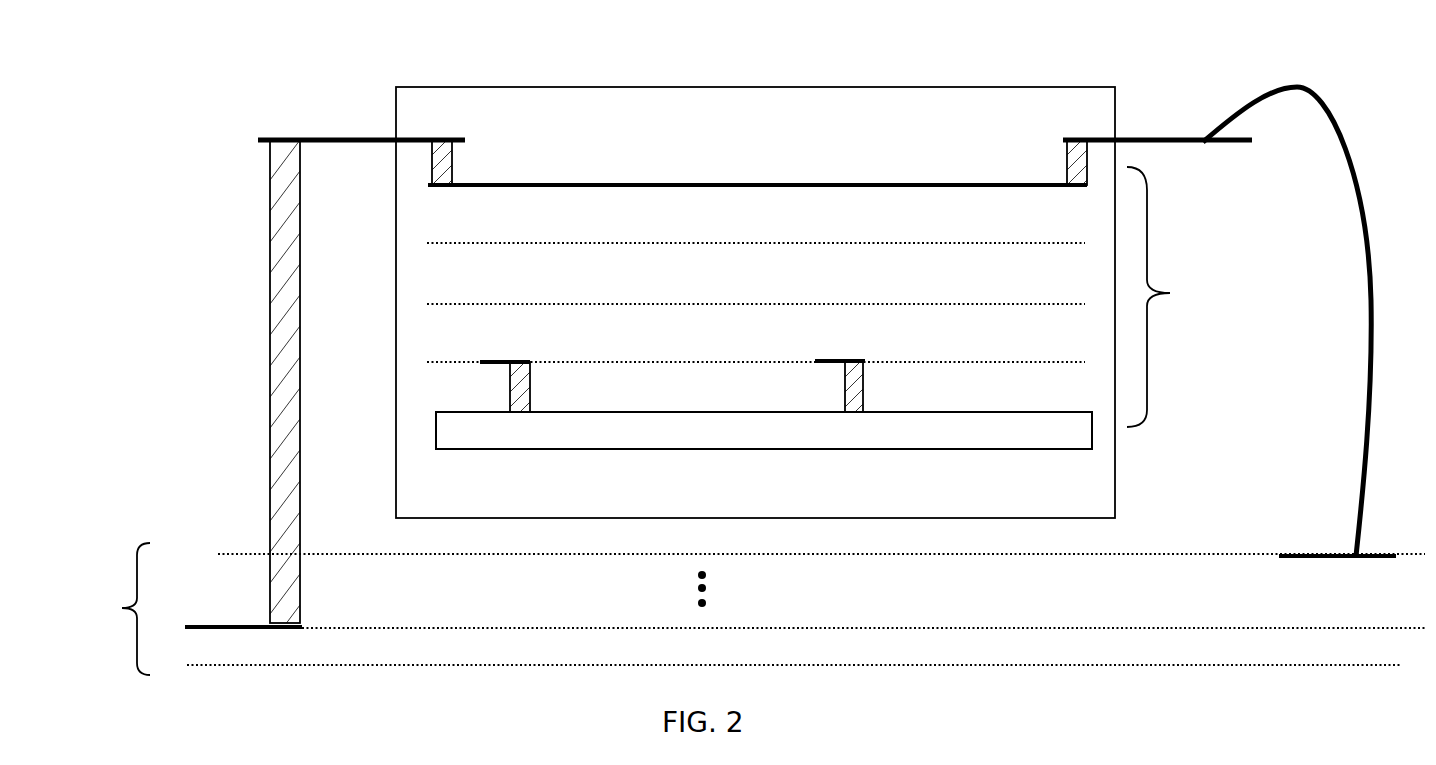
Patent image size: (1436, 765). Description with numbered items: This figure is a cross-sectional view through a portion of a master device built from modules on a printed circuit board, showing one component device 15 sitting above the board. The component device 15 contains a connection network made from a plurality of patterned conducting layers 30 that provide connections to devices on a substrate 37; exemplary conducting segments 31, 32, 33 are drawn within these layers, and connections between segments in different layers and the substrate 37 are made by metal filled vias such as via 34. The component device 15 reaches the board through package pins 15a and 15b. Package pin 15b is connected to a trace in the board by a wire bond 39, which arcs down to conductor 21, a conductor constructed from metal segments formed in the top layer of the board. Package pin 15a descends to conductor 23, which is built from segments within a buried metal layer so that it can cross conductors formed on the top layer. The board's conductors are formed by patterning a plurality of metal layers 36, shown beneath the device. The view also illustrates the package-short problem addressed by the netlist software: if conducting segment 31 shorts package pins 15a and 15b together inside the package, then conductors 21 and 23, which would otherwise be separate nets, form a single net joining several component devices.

The component device 15 is at (725, 87).
The package pin 15a is at (312, 140).
The package pin 15b is at (1180, 140).
The via 34 is at (450, 158).
The conducting segment 31 is at (672, 185).
The patterned conducting layers 30 is at (812, 297).
The conducting segment 32 is at (534, 362).
The conducting segment 33 is at (858, 361).
The substrate 37 is at (718, 437).
The wire bond 39 is at (1366, 380).
The conductor 21 is at (1378, 559).
The conductor 23 is at (197, 627).
The metal layers 36 is at (750, 609).